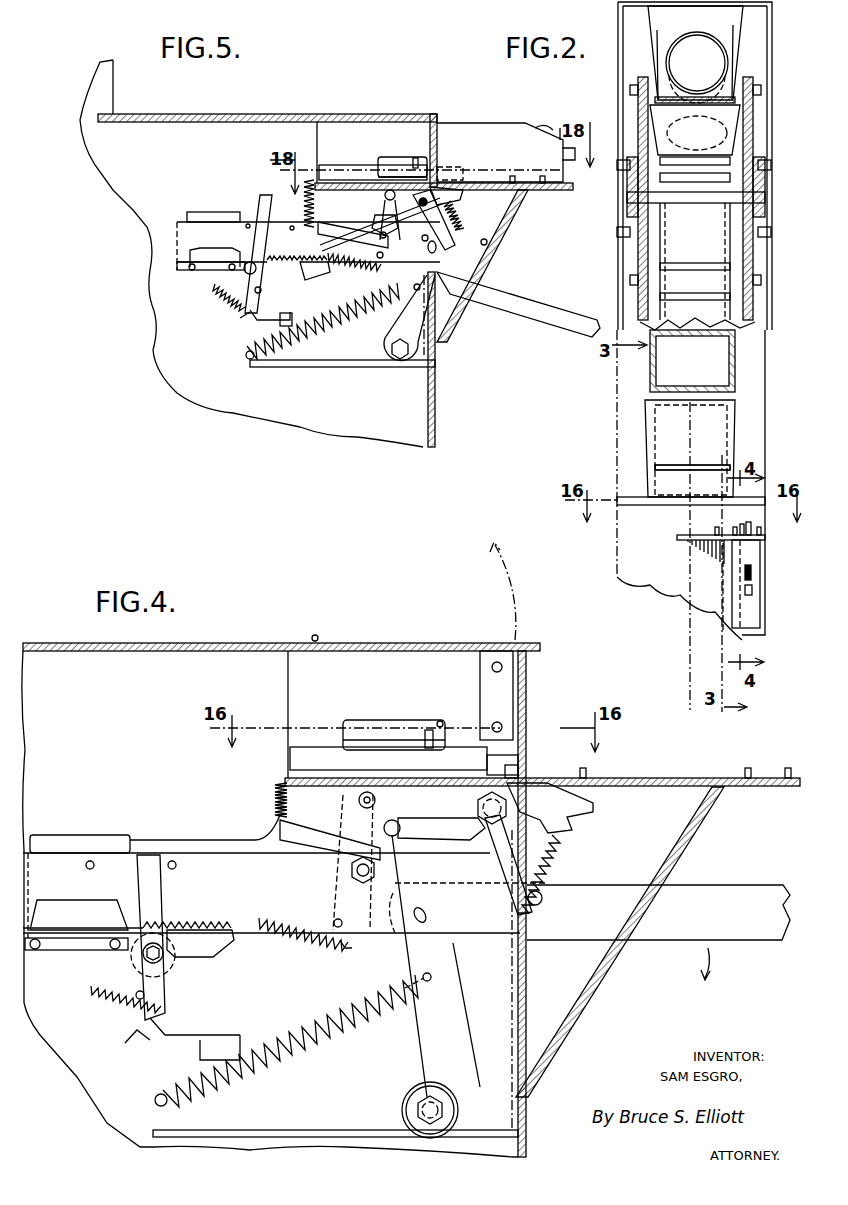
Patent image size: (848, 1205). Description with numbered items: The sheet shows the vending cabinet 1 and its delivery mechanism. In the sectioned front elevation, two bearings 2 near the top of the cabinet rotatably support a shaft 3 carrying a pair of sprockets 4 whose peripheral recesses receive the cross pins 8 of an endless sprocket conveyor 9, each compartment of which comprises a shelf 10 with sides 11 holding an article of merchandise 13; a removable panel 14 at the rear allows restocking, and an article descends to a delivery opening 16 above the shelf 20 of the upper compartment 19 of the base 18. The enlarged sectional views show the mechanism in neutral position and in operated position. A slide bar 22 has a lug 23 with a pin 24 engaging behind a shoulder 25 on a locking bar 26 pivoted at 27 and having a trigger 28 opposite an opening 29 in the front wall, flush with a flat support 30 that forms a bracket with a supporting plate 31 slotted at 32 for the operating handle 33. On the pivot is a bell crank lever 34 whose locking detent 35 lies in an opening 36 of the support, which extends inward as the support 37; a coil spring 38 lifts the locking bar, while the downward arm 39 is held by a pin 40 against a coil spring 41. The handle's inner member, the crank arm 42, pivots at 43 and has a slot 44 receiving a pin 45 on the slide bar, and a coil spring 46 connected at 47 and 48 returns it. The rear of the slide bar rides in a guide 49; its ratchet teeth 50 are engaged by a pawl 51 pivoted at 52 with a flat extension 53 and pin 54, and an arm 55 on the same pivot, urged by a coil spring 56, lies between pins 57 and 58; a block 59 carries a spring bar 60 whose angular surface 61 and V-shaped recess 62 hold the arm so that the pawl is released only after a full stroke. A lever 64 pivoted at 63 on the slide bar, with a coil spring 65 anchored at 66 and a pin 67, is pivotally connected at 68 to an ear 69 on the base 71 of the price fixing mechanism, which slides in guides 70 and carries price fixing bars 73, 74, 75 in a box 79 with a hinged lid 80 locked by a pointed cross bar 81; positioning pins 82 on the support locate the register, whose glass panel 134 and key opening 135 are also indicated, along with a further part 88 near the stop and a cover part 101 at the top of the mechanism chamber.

In FIG. 5, the housing wall 1 is at (115, 90).
In FIG. 2, the housing wall 1 is at (772, 6).
In FIG. 4, the housing wall 1 is at (40, 655).
In FIG. 2, the bearing 2 is at (627, 213).
In FIG. 2, the shaft 3 is at (694, 200).
In FIG. 2, the sprocket 4 is at (640, 110).
In FIG. 2, the cross pin 8 is at (630, 90).
In FIG. 2, the endless sprocket conveyor 9 is at (735, 462).
In FIG. 2, the shelf 10 is at (648, 20).
In FIG. 2, the side 11 is at (650, 62).
In FIG. 2, the article of merchandise 13 is at (720, 63).
In FIG. 2, the removable panel 14 is at (760, 32).
In FIG. 5, the delivery opening 16 is at (113, 78).
In FIG. 5, the base 18 is at (437, 425).
In FIG. 2, the base 18 is at (667, 600).
In FIG. 4, the base 18 is at (527, 682).
In FIG. 5, the upper compartment 19 is at (150, 222).
In FIG. 4, the upper compartment 19 is at (85, 1095).
In FIG. 5, the shelf 20 is at (232, 114).
In FIG. 2, the shelf 20 is at (617, 497).
In FIG. 4, the shelf 20 is at (255, 643).
In FIG. 5, the slide bar 22 is at (218, 212).
In FIG. 4, the slide bar 22 is at (215, 853).
In FIG. 4, the projecting lug 23 is at (394, 820).
In FIG. 5, the pin 24 is at (395, 198).
In FIG. 4, the pin 24 is at (410, 818).
In FIG. 5, the shoulder 25 is at (376, 220).
In FIG. 4, the shoulder 25 is at (375, 835).
In FIG. 5, the locking bar 26 is at (381, 224).
In FIG. 4, the locking bar 26 is at (440, 835).
In FIG. 5, the pivot pin 27 is at (423, 202).
In FIG. 4, the pivot pin 27 is at (482, 820).
In FIG. 4, the trigger 28 is at (495, 740).
In FIG. 4, the opening 29 is at (535, 768).
In FIG. 5, the flat support 30 is at (553, 191).
In FIG. 2, the flat support 30 is at (680, 541).
In FIG. 4, the flat support 30 is at (675, 778).
In FIG. 5, the supporting plate 31 is at (505, 232).
In FIG. 2, the supporting plate 31 is at (758, 615).
In FIG. 4, the supporting plate 31 is at (690, 840).
In FIG. 5, the slot 32 is at (497, 257).
In FIG. 2, the slot 32 is at (752, 592).
In FIG. 4, the slot 32 is at (612, 958).
In FIG. 5, the operating handle 33 is at (520, 305).
In FIG. 2, the operating handle 33 is at (752, 572).
In FIG. 4, the operating handle 33 is at (738, 940).
In FIG. 5, the bell crank lever 34 is at (458, 198).
In FIG. 4, the bell crank lever 34 is at (565, 812).
In FIG. 4, the locking detent 35 is at (560, 770).
In FIG. 4, the opening 36 is at (590, 768).
In FIG. 5, the support 37 is at (338, 222).
In FIG. 4, the support 37 is at (305, 795).
In FIG. 5, the coil spring 38 is at (309, 180).
In FIG. 4, the coil spring 38 is at (275, 800).
In FIG. 5, the arm 39 is at (452, 240).
In FIG. 4, the arm 39 is at (510, 878).
In FIG. 5, the pin 40 is at (488, 244).
In FIG. 4, the pin 40 is at (542, 900).
In FIG. 5, the coil spring 41 is at (460, 215).
In FIG. 4, the coil spring 41 is at (560, 850).
In FIG. 5, the crank arm 42 is at (415, 325).
In FIG. 4, the crank arm 42 is at (455, 1032).
In FIG. 5, the pivot 43 is at (395, 362).
In FIG. 4, the pivot 43 is at (420, 1105).
In FIG. 5, the slot 44 is at (422, 239).
In FIG. 4, the slot 44 is at (398, 888).
In FIG. 5, the pin 45 is at (436, 250).
In FIG. 4, the pin 45 is at (426, 915).
In FIG. 5, the coil spring 46 is at (345, 322).
In FIG. 4, the coil spring 46 is at (283, 1060).
In FIG. 5, the connection point 47 is at (421, 288).
In FIG. 4, the connection point 47 is at (432, 976).
In FIG. 5, the connection point 48 is at (250, 360).
In FIG. 4, the connection point 48 is at (158, 1095).
In FIG. 5, the guide 49 is at (205, 255).
In FIG. 4, the guide 49 is at (70, 905).
In FIG. 5, the ratchet teeth 50 is at (312, 262).
In FIG. 4, the ratchet teeth 50 is at (200, 922).
In FIG. 5, the pawl 51 is at (300, 272).
In FIG. 4, the pawl 51 is at (195, 952).
In FIG. 5, the pivot 52 is at (256, 265).
In FIG. 4, the pivot 52 is at (143, 953).
In FIG. 5, the flat extension 53 is at (248, 275).
In FIG. 4, the flat extension 53 is at (135, 962).
In FIG. 5, the pin 54 is at (261, 291).
In FIG. 4, the pin 54 is at (145, 995).
In FIG. 5, the arm 55 is at (262, 200).
In FIG. 4, the arm 55 is at (137, 890).
In FIG. 5, the coil spring 56 is at (232, 300).
In FIG. 4, the coil spring 56 is at (118, 1000).
In FIG. 5, the pin 57 is at (248, 224).
In FIG. 4, the pin 57 is at (90, 861).
In FIG. 5, the pin 58 is at (291, 226).
In FIG. 4, the pin 58 is at (172, 861).
In FIG. 5, the block 59 is at (292, 315).
In FIG. 4, the block 59 is at (208, 1040).
In FIG. 4, the spring bar 60 is at (192, 1035).
In FIG. 5, the angular engaging surface 61 is at (258, 320).
In FIG. 4, the angular engaging surface 61 is at (165, 1036).
In FIG. 5, the V-shaped recess 62 is at (243, 318).
In FIG. 4, the V-shaped recess 62 is at (136, 1032).
In FIG. 5, the pivot 63 is at (380, 236).
In FIG. 4, the pivot 63 is at (350, 870).
In FIG. 4, the lever 64 is at (355, 950).
In FIG. 5, the coil spring 65 is at (345, 266).
In FIG. 4, the coil spring 65 is at (305, 945).
In FIG. 5, the connection point 66 is at (335, 250).
In FIG. 4, the connection point 66 is at (260, 920).
In FIG. 5, the pin 67 is at (383, 255).
In FIG. 4, the pin 67 is at (334, 922).
In FIG. 4, the pivotal connection 68 is at (362, 806).
In FIG. 4, the ear 69 is at (359, 797).
In FIG. 5, the guide 70 is at (350, 165).
In FIG. 4, the guide 70 is at (290, 755).
In FIG. 4, the base 71 is at (330, 755).
In FIG. 2, the price fixing bar 73 is at (752, 530).
In FIG. 2, the price fixing bar 74 is at (748, 522).
In FIG. 4, the price fixing bar 74 is at (527, 716).
In FIG. 2, the price fixing bar 75 is at (741, 525).
In FIG. 5, the box-like compartment 79 is at (392, 157).
In FIG. 4, the box-like compartment 79 is at (395, 735).
In FIG. 5, the hinged lid 80 is at (420, 157).
In FIG. 4, the hinged lid 80 is at (380, 720).
In FIG. 5, the pointed cross bar 81 is at (415, 158).
In FIG. 4, the pointed cross bar 81 is at (429, 730).
In FIG. 5, the positioning pin 82 is at (540, 176).
In FIG. 2, the positioning pin 82 is at (716, 527).
In FIG. 4, the positioning pin 82 is at (588, 771).
In FIG. 4, the stop plate 88 is at (520, 750).
In FIG. 5, the cover 101 is at (535, 122).
In FIG. 5, the glass panel 134 is at (548, 126).
In FIG. 5, the opening 135 is at (450, 167).